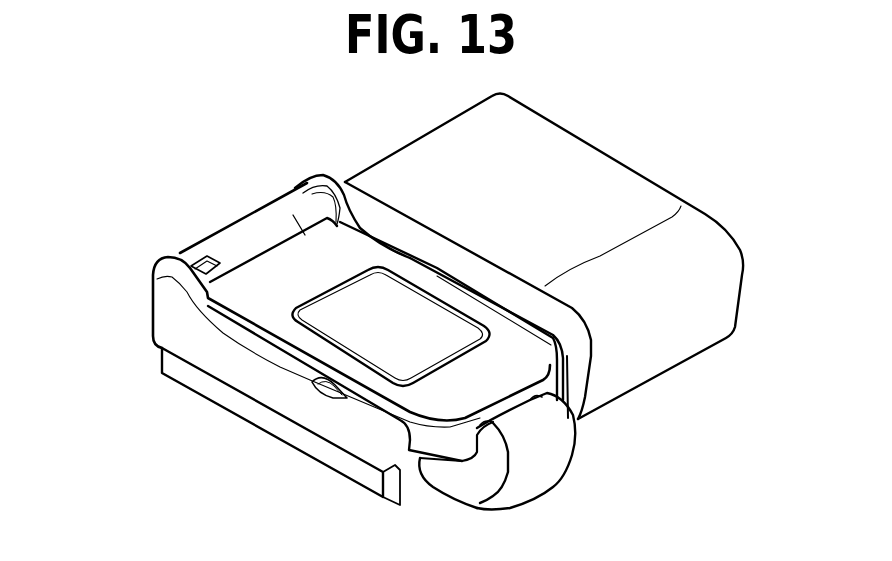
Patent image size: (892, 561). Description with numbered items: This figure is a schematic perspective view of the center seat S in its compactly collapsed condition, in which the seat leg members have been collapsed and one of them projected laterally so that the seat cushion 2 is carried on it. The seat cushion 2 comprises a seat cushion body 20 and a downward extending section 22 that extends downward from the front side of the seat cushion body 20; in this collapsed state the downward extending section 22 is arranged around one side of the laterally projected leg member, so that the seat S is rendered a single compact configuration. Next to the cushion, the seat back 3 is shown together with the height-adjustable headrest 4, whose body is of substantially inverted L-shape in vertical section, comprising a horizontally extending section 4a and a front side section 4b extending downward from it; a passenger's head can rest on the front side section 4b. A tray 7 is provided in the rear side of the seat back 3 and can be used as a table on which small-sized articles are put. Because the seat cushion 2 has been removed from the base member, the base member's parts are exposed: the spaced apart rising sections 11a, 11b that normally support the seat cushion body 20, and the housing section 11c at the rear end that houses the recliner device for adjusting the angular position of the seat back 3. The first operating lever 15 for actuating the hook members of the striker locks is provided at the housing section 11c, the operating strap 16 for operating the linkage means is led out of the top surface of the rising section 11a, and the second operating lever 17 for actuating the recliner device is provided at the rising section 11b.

The center seat S is at (704, 158).
The seat cushion 2 is at (585, 203).
The seat back 3 is at (250, 293).
The headrest 4 is at (590, 453).
The horizontally extending section 4a is at (450, 483).
The front side section 4b is at (543, 463).
The tray 7 is at (417, 320).
The rising section 11a is at (180, 333).
The rising section 11b is at (329, 182).
The housing section 11c is at (255, 230).
The first operating lever 15 is at (414, 258).
The operating strap 16 is at (317, 382).
The second operating lever 17 is at (205, 253).
The seat cushion body 20 is at (515, 167).
The downward extending section 22 is at (650, 357).